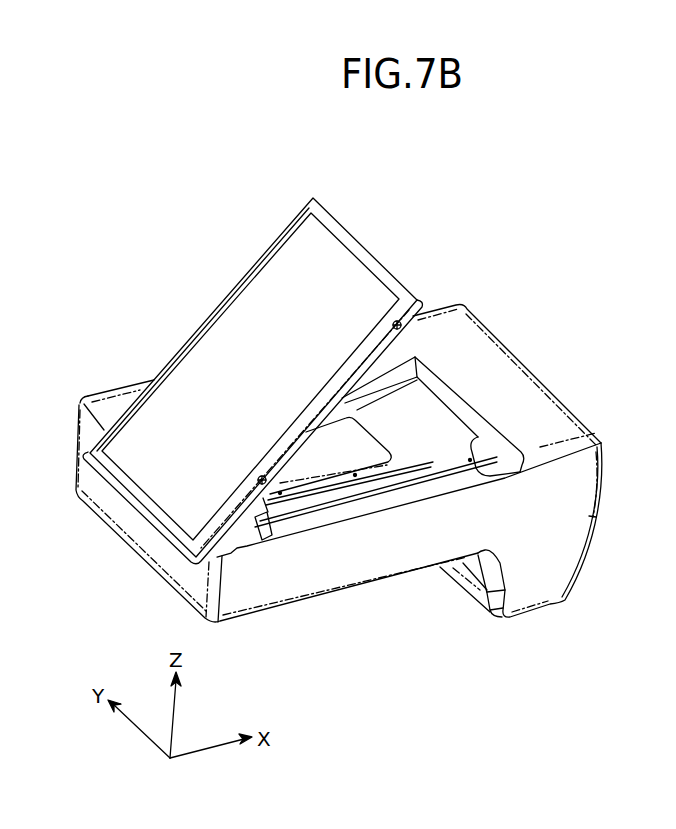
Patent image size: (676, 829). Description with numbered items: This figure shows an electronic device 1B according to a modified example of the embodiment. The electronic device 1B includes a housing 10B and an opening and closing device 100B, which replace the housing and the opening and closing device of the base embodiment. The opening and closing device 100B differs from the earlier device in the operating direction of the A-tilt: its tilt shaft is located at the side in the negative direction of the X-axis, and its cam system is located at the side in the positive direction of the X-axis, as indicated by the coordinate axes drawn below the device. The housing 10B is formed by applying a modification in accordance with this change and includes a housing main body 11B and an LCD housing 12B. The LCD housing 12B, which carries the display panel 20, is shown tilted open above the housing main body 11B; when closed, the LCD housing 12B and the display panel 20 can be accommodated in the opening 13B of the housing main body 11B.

The electronic device 1B is at (498, 180).
The housing 10B is at (479, 311).
The housing main body 11B is at (495, 375).
The LCD housing 12B is at (318, 198).
The opening 13B is at (428, 385).
The display panel 20 is at (218, 357).
The opening and closing device 100B is at (356, 437).